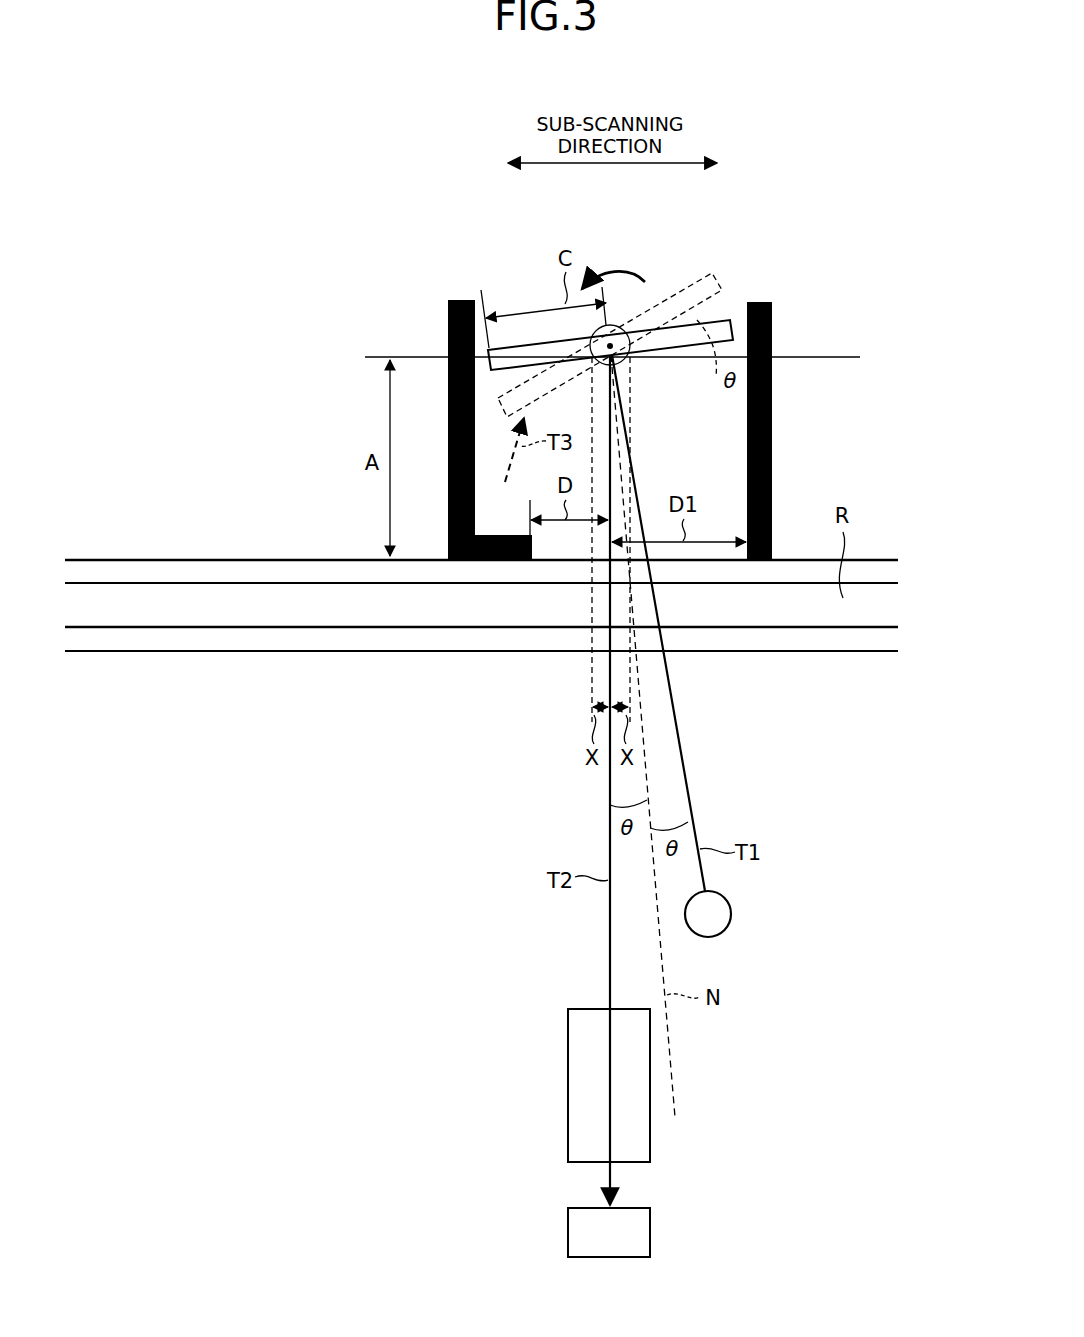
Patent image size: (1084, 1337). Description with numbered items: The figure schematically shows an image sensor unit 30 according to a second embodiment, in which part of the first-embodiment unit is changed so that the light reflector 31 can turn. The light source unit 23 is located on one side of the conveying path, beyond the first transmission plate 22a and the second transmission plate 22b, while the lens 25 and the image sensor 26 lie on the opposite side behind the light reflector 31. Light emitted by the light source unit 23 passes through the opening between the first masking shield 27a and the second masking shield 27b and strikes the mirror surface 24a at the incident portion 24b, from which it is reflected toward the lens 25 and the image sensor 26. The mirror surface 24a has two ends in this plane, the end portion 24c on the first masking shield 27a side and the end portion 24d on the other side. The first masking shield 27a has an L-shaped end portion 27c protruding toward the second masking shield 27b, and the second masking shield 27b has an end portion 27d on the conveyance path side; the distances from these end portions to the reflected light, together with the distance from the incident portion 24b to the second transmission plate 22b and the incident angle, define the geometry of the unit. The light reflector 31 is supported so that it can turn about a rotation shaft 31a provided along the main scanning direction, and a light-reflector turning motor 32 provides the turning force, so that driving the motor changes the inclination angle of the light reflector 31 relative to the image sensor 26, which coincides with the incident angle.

The image sensor unit 30 is at (798, 120).
The light reflector 31 is at (532, 340).
The rotation shaft 31a is at (622, 352).
The light-reflector turning motor 32 is at (623, 328).
The mirror surface 24a is at (722, 345).
The incident portion 24b is at (623, 362).
The end portion 24c is at (490, 358).
The end portion 24d is at (735, 331).
The first masking shield 27a is at (448, 306).
The second masking shield 27b is at (772, 311).
The end portion 27c is at (484, 562).
The end portion 27d is at (762, 562).
The first transmission plate 22a is at (224, 641).
The second transmission plate 22b is at (226, 568).
The light source unit 23 is at (732, 912).
The lens 25 is at (568, 1087).
The image sensor 26 is at (568, 1235).